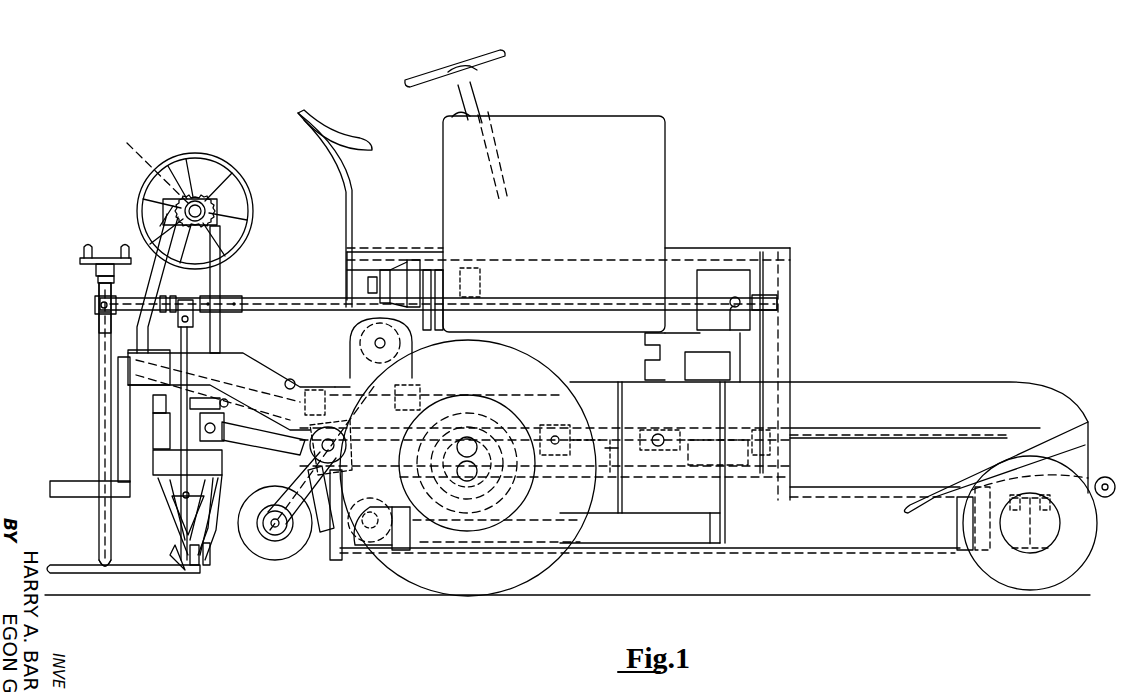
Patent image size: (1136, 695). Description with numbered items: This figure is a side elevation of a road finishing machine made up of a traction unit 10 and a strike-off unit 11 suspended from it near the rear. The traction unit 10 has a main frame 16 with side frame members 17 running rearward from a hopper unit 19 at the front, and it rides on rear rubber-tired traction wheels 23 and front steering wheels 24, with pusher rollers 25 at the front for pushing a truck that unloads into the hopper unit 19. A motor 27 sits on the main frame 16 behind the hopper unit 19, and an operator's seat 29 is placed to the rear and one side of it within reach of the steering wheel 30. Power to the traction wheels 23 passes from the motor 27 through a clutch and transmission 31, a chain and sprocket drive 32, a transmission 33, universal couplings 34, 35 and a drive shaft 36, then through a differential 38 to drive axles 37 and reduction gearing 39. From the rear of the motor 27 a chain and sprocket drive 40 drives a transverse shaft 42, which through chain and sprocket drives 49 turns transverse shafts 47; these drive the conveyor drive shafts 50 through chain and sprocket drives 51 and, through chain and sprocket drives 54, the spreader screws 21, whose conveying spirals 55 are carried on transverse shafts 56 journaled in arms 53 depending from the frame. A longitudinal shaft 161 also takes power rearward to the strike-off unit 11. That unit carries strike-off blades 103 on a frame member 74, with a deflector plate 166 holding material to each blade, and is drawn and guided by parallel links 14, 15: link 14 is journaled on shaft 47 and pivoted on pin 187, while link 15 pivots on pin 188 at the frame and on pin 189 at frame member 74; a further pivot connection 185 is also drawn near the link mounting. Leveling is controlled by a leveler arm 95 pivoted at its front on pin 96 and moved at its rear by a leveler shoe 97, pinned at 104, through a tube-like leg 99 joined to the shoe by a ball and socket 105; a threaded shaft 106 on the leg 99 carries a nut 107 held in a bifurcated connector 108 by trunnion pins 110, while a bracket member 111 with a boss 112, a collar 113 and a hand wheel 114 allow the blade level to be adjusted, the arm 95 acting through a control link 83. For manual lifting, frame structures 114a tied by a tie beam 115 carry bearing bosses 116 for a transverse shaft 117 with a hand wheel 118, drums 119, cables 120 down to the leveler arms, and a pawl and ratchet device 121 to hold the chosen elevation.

The traction unit 10 is at (846, 380).
The strike-off unit 11 is at (168, 498).
The parallel link 14 is at (286, 439).
The parallel link 15 is at (236, 361).
The main frame 16 is at (752, 553).
The side frame member 17 is at (622, 385).
The hopper unit 19 is at (965, 381).
The spreader screw 21 is at (292, 552).
The traction wheel 23 is at (505, 580).
The front steering wheel 24 is at (1027, 578).
The pusher roller 25 is at (1105, 477).
The motor 27 is at (666, 206).
The operator's seat 29 is at (333, 133).
The steering wheel 30 is at (425, 80).
The clutch and transmission 31 is at (688, 268).
The chain and sprocket drive 32 is at (764, 272).
The transmission 33 is at (735, 472).
The universal coupling 34 is at (660, 452).
The universal coupling 35 is at (555, 425).
The drive shaft 36 is at (610, 460).
The drive axle 37 is at (522, 470).
The differential 38 is at (506, 428).
The reduction gearing 39 is at (500, 505).
The chain and sprocket drive 40 is at (414, 262).
The transverse shaft 42 is at (372, 277).
The transverse shaft 47 is at (284, 470).
The chain and sprocket drive 49 is at (346, 451).
The conveyor drive shaft 50 is at (381, 545).
The chain and sprocket drive 51 is at (362, 545).
The arm 53 is at (264, 538).
The chain and sprocket drive 54 is at (315, 512).
The conveying spiral 55 is at (268, 556).
The transverse shaft 56 is at (278, 538).
The frame member 74 is at (184, 512).
The control link 83 is at (180, 338).
The leveler arm 95 is at (290, 300).
The transverse pivot pin 96 is at (733, 300).
The leveler shoe 97 is at (121, 578).
The leg 99 is at (99, 430).
The strike-off blade 103 is at (204, 560).
The pivot pin 104 is at (185, 571).
The ball and socket 105 is at (110, 572).
The threaded shaft 106 is at (100, 330).
The nut 107 is at (98, 305).
The bifurcated connector 108 is at (100, 300).
The trunnion pin 110 is at (98, 311).
The bracket member 111 is at (100, 268).
The inwardly extending portion 112 is at (116, 270).
The collar 113 is at (99, 280).
The hand wheel 114 is at (88, 250).
The frame structure 114a is at (221, 272).
The tie beam 115 is at (165, 213).
The bearing boss 116 is at (200, 205).
The transverse shaft 117 is at (205, 211).
The hand wheel 118 is at (251, 200).
The drum 119 is at (150, 168).
The flexible cable 120 is at (221, 290).
The pawl and ratchet device 121 is at (187, 198).
The longitudinal shaft 161 is at (318, 392).
The deflector plate 166 is at (212, 522).
The pivot 185 is at (338, 440).
The pivot pin 187 is at (212, 434).
The pivot pin 188 is at (291, 378).
The pivot pin 189 is at (128, 363).